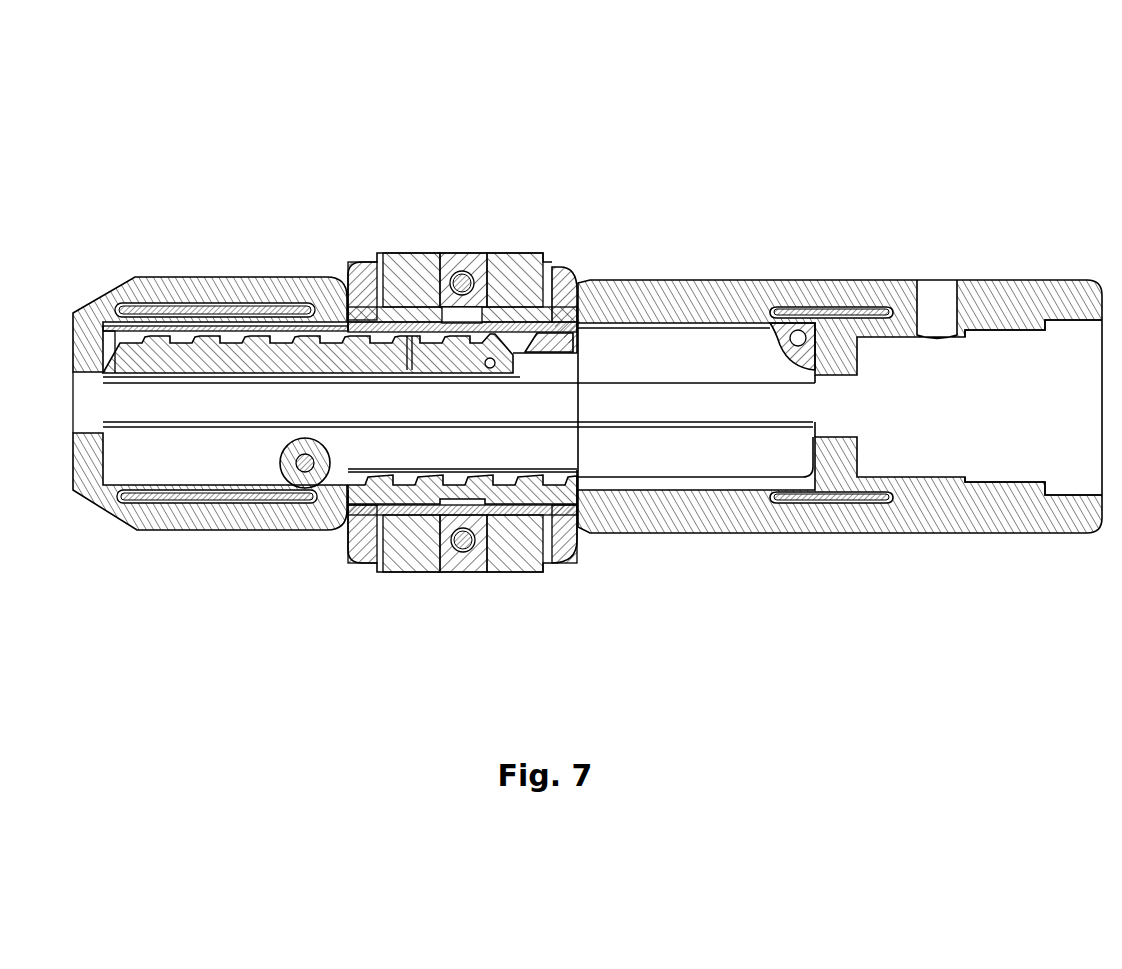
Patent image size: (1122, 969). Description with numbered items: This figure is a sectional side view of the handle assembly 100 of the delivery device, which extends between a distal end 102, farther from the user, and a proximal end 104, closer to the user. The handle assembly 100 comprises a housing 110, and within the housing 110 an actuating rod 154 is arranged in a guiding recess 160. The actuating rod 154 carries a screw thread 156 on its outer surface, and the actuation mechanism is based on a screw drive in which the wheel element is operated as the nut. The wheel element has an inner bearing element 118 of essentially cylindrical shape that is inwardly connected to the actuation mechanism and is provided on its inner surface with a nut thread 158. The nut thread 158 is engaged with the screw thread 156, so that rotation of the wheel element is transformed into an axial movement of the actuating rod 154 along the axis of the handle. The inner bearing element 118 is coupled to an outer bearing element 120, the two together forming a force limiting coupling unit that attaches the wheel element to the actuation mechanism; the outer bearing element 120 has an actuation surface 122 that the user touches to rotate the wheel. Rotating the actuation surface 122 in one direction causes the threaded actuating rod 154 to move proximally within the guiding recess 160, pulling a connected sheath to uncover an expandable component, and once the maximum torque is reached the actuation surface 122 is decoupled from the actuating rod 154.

The handle assembly 100 is at (947, 86).
The distal end 102 is at (109, 546).
The proximal end 104 is at (1078, 558).
The housing 110 is at (727, 533).
The inner bearing element 118 is at (563, 267).
The outer bearing element 120 is at (392, 253).
The actuation surface 122 is at (510, 249).
The actuating rod 154 is at (165, 350).
The screw thread 156 is at (258, 348).
The nut thread 158 is at (522, 347).
The guiding recess 160 is at (110, 348).